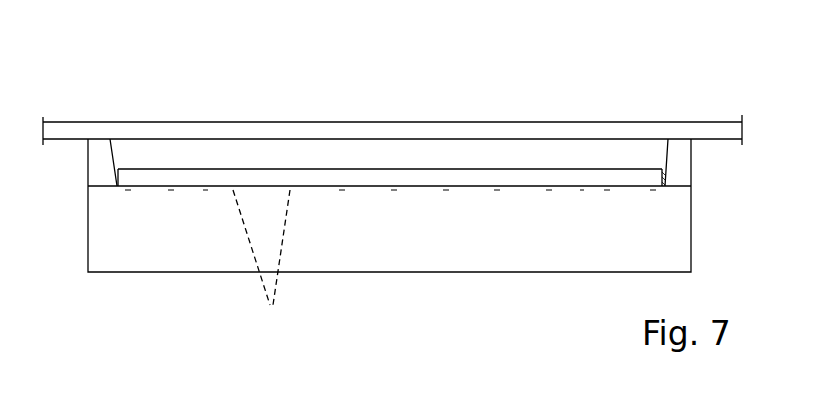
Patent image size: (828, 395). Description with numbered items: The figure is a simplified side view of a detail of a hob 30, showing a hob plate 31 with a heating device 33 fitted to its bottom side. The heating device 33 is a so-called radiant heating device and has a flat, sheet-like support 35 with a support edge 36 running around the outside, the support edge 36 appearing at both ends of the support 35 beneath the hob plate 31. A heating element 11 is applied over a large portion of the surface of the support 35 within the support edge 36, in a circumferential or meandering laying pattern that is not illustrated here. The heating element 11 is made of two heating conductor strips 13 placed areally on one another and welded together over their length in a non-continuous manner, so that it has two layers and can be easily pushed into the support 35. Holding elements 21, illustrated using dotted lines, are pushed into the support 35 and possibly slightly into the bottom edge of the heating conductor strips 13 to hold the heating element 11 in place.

The hob 30 is at (90, 102).
The hob plate 31 is at (148, 124).
The heating element 11 is at (308, 157).
The heating conductor strips 13 is at (433, 158).
The support edge 36 is at (88, 165).
The heating device 33 is at (139, 283).
The holding elements 21 is at (261, 262).
The support 35 is at (418, 242).